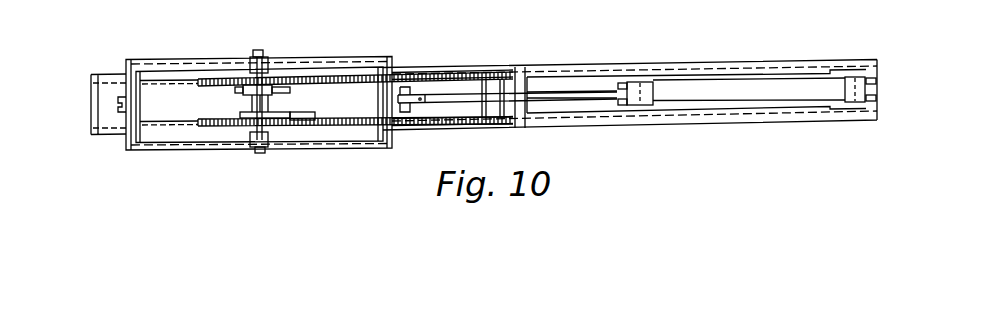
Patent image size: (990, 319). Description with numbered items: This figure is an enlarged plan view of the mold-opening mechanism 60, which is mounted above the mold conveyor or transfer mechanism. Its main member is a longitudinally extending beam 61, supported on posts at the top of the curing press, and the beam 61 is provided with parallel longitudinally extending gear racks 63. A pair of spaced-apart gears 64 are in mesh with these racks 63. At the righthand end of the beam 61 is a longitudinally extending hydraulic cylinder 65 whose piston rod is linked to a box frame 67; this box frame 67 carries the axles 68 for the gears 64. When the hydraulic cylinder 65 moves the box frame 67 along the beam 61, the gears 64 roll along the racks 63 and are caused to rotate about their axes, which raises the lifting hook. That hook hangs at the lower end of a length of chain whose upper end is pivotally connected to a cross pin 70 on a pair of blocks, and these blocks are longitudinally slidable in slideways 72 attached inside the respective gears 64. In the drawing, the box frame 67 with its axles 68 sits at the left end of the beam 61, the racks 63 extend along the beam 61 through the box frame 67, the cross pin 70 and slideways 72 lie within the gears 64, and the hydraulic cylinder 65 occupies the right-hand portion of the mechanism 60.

The mold-opening mechanism 60 is at (456, 62).
The longitudinally extending beam 61 is at (569, 66).
The gear racks 63 is at (416, 77).
The gears 64 is at (297, 80).
The hydraulic cylinder 65 is at (720, 87).
The box frame 67 is at (367, 56).
The axles 68 is at (258, 49).
The cross pin 70 is at (252, 102).
The slideways 72 is at (302, 115).